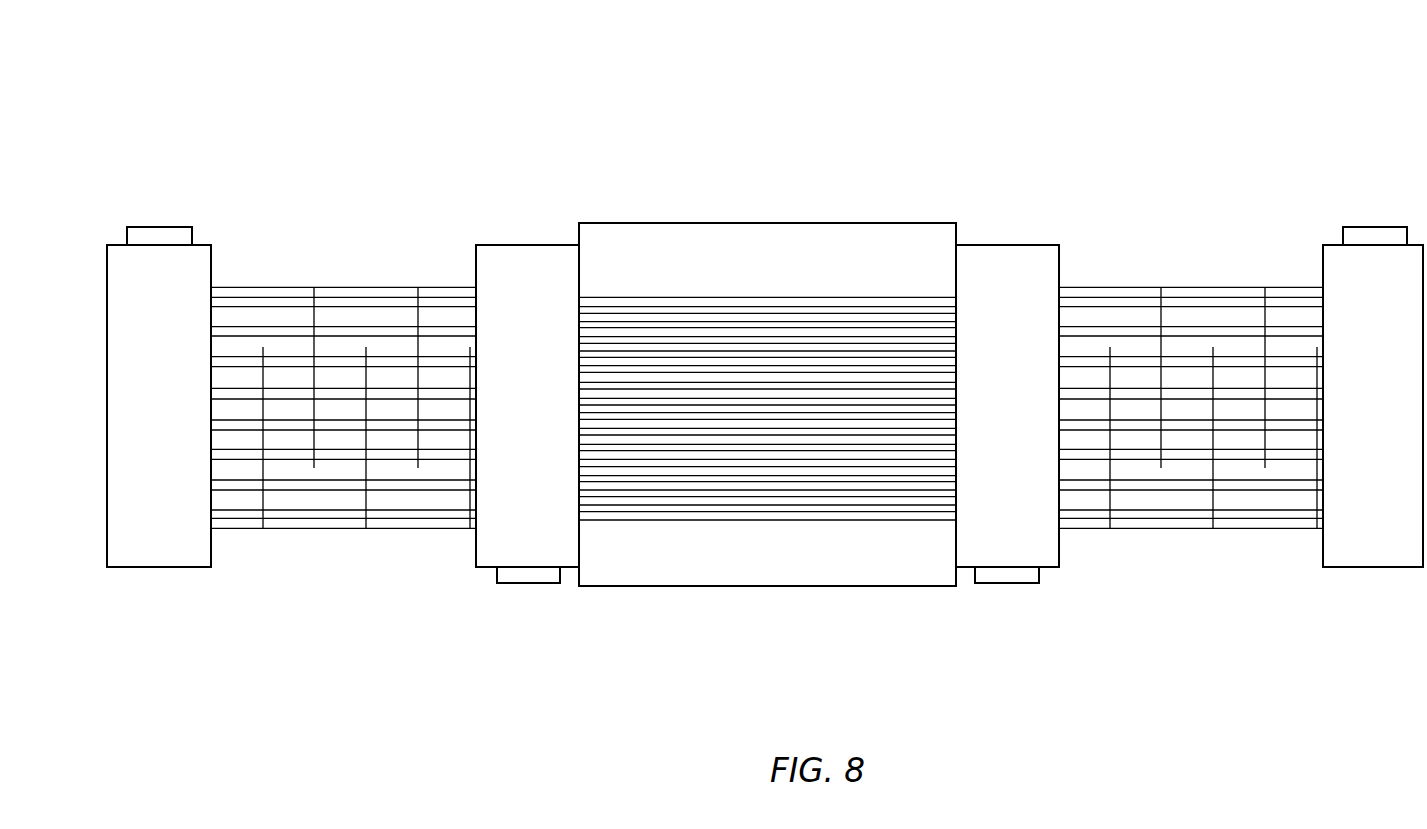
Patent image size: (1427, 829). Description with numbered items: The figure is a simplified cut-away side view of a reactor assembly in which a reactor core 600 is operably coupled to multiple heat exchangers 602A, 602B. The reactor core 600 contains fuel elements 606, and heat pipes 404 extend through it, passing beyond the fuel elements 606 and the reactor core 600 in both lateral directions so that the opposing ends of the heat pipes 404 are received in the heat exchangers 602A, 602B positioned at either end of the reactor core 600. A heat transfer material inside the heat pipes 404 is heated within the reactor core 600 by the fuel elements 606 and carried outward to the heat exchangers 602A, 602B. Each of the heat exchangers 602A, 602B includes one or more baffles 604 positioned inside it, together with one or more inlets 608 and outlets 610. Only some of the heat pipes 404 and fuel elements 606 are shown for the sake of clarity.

The reactor core 600 is at (852, 195).
The fuel elements 606 is at (643, 313).
The heat exchanger 602A is at (402, 266).
The heat exchanger 602B is at (1251, 265).
The heat pipes 404 is at (300, 303).
The baffles 604 is at (314, 438).
The inlets 608 is at (149, 226).
The outlets 610 is at (533, 583).